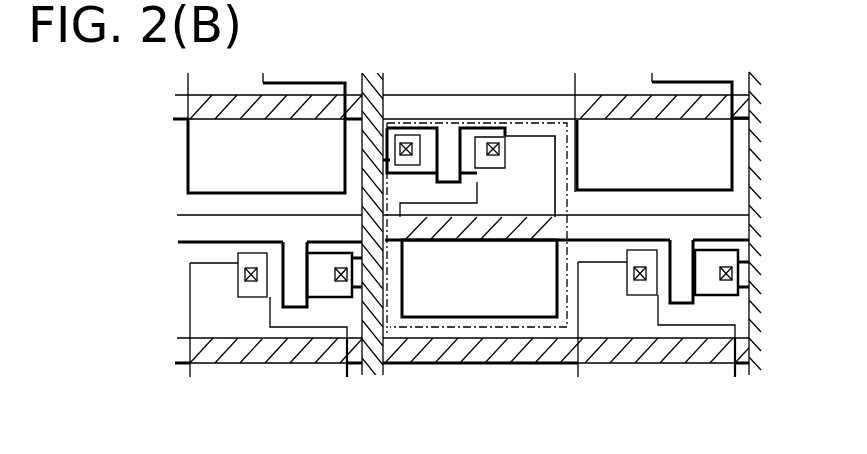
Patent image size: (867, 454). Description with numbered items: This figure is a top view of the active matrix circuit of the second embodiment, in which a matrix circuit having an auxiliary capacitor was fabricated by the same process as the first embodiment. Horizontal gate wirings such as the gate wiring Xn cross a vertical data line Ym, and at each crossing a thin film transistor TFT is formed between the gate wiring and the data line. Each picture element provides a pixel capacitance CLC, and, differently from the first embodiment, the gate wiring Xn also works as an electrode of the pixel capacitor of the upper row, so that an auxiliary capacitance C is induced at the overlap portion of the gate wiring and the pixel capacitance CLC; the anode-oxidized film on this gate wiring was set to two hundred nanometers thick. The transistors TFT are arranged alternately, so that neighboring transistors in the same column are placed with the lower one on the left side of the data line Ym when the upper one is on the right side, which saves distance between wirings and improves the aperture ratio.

The data line Ym is at (383, 76).
The gate wiring Xn is at (517, 105).
The thin film transistor TFT is at (498, 115).
The pixel capacitance CLC is at (425, 297).
The auxiliary capacitance C is at (488, 232).